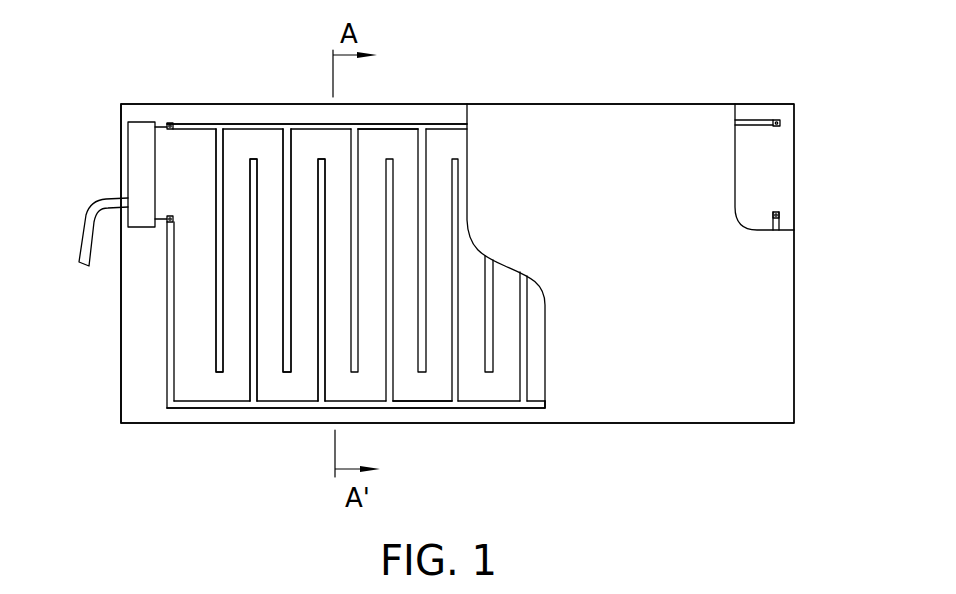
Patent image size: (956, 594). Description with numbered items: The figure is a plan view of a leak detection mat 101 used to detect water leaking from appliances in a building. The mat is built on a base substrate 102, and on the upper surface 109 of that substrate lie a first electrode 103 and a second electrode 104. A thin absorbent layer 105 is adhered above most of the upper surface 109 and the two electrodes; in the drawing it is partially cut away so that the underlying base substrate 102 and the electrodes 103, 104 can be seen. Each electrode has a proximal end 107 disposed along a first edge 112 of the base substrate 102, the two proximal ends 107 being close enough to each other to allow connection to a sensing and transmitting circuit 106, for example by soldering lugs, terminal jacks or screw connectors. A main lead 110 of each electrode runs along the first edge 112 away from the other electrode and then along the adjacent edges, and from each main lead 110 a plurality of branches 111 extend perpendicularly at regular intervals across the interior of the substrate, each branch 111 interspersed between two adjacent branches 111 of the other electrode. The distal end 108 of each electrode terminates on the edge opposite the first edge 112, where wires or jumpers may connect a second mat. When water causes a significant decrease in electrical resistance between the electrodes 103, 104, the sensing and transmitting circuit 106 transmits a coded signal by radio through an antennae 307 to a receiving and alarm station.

The leak detection mat 101 is at (381, 101).
The base substrate 102 is at (145, 397).
The first electrode 103 is at (178, 419).
The second electrode 104 is at (241, 112).
The absorbent layer 105 is at (598, 128).
The sensing and transmitting circuit 106 is at (140, 162).
The proximal ends 107 is at (173, 216).
The distal ends 108 is at (779, 211).
The upper surface 109 is at (403, 380).
The main lead 110 is at (404, 124).
The branches 111 is at (421, 156).
The first edge 112 is at (112, 383).
The antennae 307 is at (100, 200).